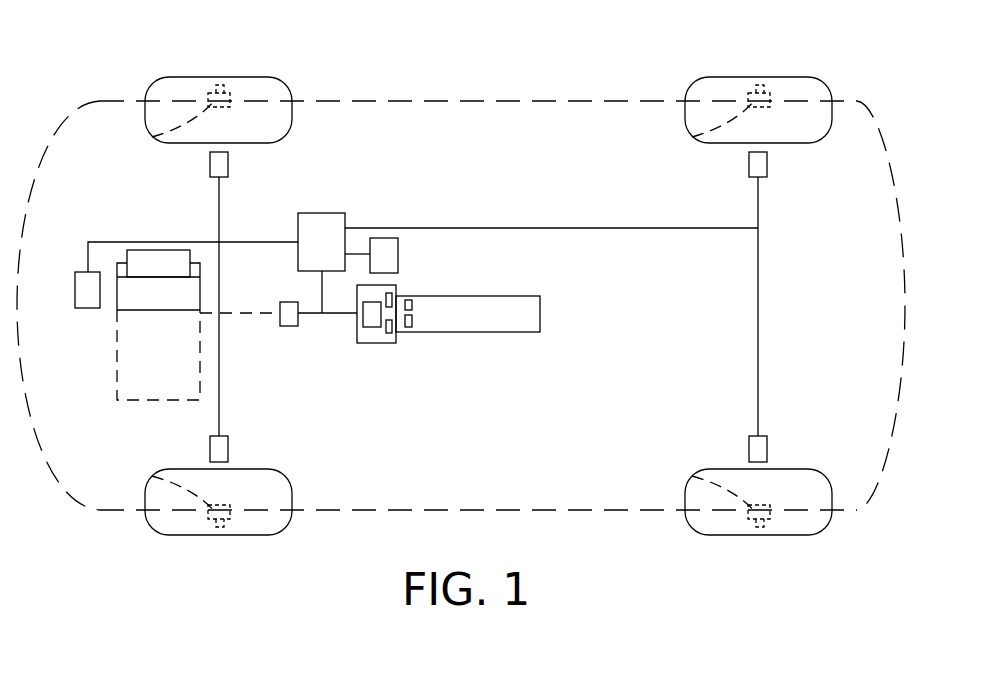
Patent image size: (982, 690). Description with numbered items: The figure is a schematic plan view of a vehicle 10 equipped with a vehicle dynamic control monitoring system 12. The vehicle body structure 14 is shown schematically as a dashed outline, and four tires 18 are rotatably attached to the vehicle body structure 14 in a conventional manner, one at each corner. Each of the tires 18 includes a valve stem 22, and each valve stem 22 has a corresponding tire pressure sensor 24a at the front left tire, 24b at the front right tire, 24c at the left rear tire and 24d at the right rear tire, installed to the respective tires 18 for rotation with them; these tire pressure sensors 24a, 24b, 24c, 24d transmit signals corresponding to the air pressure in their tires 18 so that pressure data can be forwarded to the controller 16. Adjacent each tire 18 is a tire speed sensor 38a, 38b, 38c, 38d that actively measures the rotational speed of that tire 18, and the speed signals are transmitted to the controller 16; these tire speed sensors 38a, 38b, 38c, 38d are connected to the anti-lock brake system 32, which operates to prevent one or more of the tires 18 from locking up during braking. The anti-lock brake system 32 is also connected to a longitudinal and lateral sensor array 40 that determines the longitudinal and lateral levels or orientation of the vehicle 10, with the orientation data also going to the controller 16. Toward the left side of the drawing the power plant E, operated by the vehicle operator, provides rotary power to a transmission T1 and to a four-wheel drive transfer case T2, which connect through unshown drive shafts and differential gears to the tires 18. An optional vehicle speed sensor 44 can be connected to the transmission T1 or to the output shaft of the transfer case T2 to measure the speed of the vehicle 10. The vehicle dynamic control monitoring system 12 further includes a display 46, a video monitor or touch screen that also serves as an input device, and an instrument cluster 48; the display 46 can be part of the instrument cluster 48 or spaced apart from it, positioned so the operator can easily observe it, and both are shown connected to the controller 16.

The vehicle 10 is at (586, 45).
The vehicle dynamic control monitoring system 12 is at (292, 220).
The vehicle body structure 14 is at (488, 100).
The controller 16 is at (330, 228).
The tires 18 is at (183, 77).
The valve stem 22 is at (226, 86).
The tire pressure sensor 24a is at (152, 137).
The tire pressure sensor 24b is at (152, 476).
The tire pressure sensor 24c is at (692, 137).
The tire pressure sensor 24d is at (692, 476).
The anti-lock brake system 32 is at (386, 254).
The tire speed sensor 38a is at (212, 165).
The tire speed sensor 38b is at (225, 448).
The tire speed sensor 38c is at (765, 163).
The tire speed sensor 38d is at (765, 448).
The longitudinal and lateral sensor array 40 is at (87, 297).
The vehicle speed sensor 44 is at (291, 327).
The display 46 is at (373, 326).
The instrument cluster 48 is at (364, 334).
The transmission T1 is at (164, 262).
The four-wheel drive transfer case T2 is at (148, 292).
The power plant E is at (160, 402).